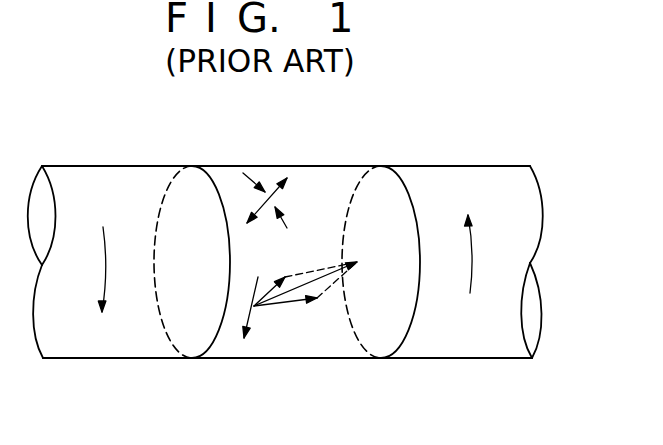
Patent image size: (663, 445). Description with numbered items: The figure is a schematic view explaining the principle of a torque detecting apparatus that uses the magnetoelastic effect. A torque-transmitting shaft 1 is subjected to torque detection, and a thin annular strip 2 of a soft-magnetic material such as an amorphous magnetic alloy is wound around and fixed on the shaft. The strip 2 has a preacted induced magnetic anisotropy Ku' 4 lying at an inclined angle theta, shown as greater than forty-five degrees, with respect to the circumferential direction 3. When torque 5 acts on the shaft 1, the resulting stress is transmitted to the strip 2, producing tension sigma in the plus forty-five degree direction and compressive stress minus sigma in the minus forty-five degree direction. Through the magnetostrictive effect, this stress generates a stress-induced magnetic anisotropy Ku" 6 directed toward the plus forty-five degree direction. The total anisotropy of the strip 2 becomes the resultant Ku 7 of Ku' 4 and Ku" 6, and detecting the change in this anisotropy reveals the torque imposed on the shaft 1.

The torque-transmitting shaft 1 is at (459, 165).
The thin annular strip 2 is at (322, 165).
The circumferential direction 3 is at (253, 318).
The induced magnetic anisotropy Ku' 4 is at (288, 303).
The torque 5 is at (105, 249).
The stress-induced magnetic anisotropy Ku" 6 is at (278, 272).
The total magnetic anisotropy Ku 7 is at (303, 272).